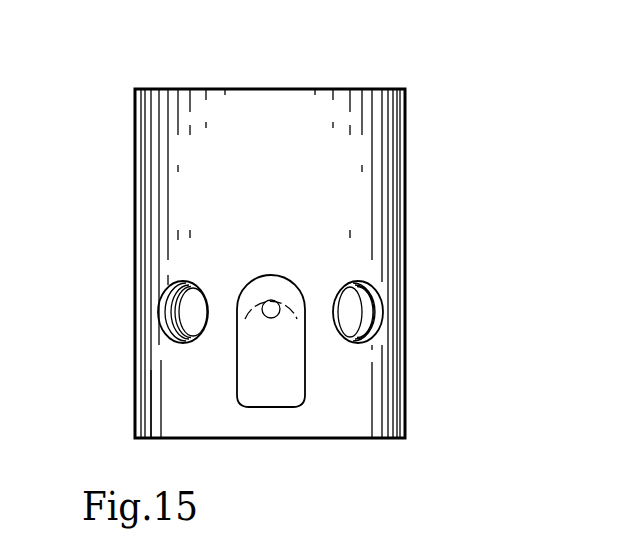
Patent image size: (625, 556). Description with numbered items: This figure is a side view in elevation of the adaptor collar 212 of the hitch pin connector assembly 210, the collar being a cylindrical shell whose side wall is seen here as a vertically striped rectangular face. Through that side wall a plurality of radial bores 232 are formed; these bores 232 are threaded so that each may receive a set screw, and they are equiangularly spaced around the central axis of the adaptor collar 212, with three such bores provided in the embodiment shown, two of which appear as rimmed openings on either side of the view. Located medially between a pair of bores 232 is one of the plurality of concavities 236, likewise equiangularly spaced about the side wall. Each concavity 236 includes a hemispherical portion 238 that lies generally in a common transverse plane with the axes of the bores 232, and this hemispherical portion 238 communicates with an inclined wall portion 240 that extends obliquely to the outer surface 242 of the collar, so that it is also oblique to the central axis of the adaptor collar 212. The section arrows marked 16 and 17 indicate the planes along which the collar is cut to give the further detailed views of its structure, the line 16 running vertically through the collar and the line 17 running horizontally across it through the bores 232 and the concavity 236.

The section line 16- 16 is at (303, 273).
The section line 17- 17 is at (267, 352).
The bracket assembly 210 is at (0, 183).
The adaptor collar 212 is at (212, 223).
The radial bores 232 is at (183, 283).
The concavities 236 is at (281, 280).
The hemispherical portion 238 is at (248, 290).
The inclined wall portion 240 is at (276, 377).
The outer surface 242 is at (162, 393).